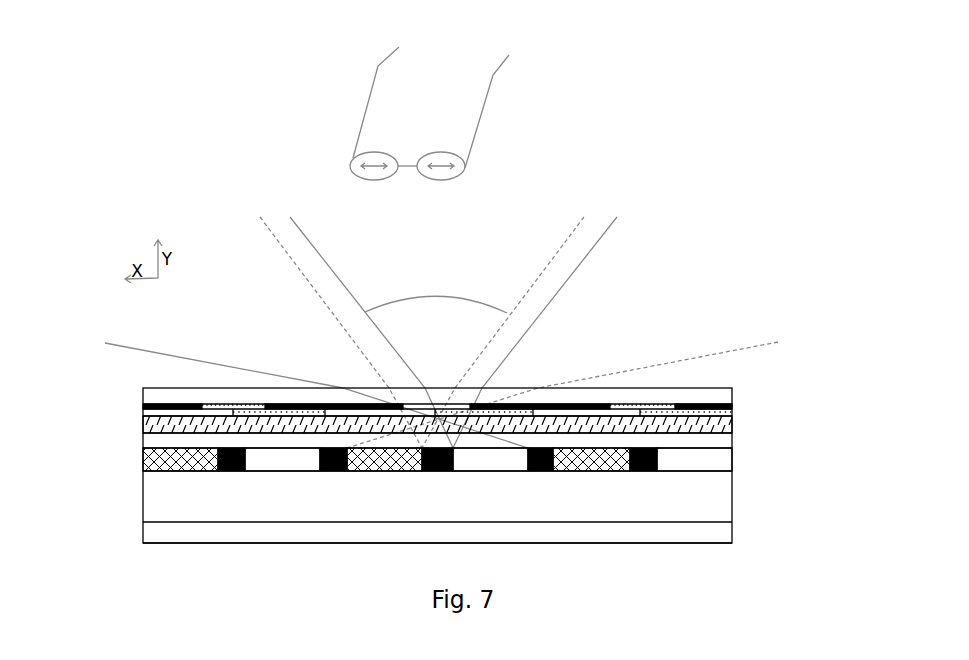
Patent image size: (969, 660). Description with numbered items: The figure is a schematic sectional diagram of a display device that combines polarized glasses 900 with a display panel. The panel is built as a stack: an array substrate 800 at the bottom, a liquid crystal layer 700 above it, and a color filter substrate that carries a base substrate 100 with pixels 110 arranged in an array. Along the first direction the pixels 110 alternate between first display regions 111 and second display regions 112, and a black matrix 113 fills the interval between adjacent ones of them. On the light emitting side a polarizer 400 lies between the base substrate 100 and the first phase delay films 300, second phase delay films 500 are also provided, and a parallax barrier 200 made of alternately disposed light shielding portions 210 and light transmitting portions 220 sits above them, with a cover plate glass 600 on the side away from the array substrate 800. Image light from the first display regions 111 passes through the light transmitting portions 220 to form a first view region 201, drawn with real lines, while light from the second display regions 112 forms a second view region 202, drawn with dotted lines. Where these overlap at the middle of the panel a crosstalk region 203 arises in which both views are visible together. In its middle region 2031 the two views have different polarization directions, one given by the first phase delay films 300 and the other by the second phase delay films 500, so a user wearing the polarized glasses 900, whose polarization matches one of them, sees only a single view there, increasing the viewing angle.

The polarized glasses 900 is at (365, 115).
The crosstalk region 203 is at (487, 228).
The middle region 2031 is at (455, 295).
The first view region 201 is at (138, 333).
The second view region 202 is at (723, 332).
The cover plate glass 600 is at (160, 400).
The second phase delay films 500 is at (148, 415).
The first phase delay films 300 is at (722, 419).
The polarizer 400 is at (702, 430).
The base substrate 100 is at (486, 488).
The pixels 110 is at (486, 491).
The first display regions 111 is at (700, 467).
The second display regions 112 is at (595, 472).
The black matrix 113 is at (548, 472).
The parallax barrier 200 is at (486, 394).
The light shielding portions 210 is at (734, 406).
The light transmitting portions 220 is at (643, 407).
The liquid crystal layer 700 is at (150, 505).
The array substrate 800 is at (150, 533).